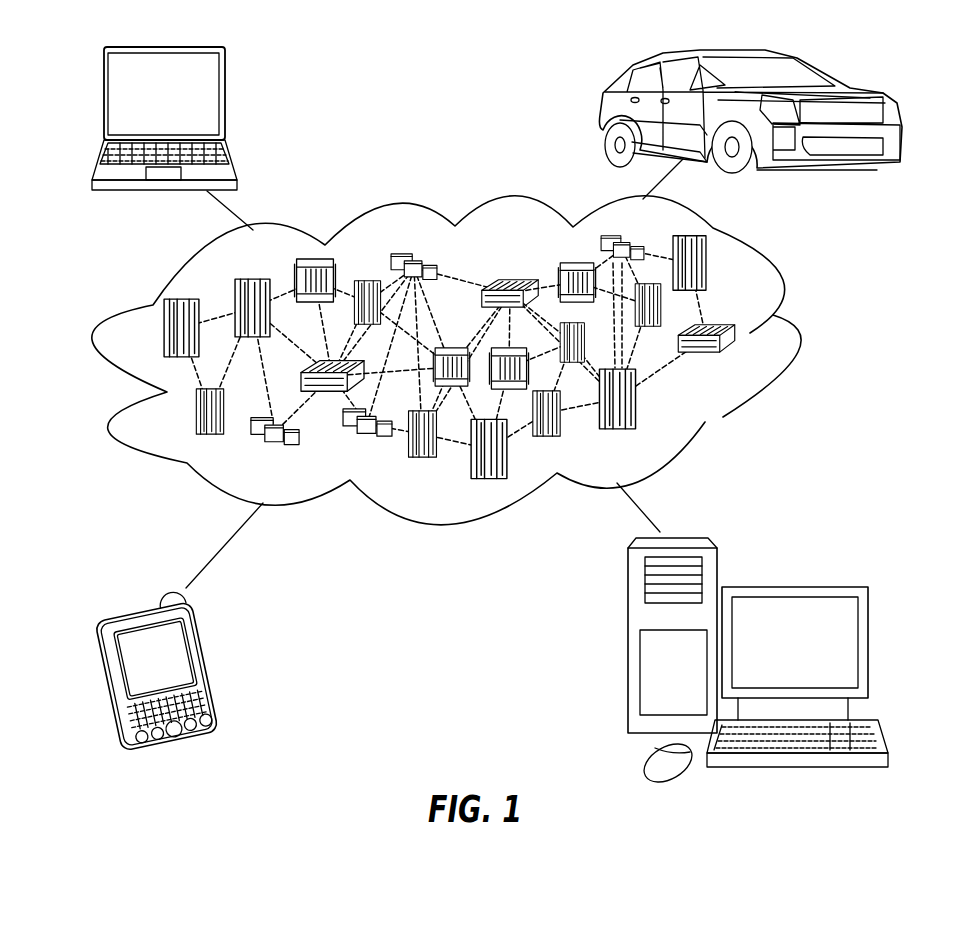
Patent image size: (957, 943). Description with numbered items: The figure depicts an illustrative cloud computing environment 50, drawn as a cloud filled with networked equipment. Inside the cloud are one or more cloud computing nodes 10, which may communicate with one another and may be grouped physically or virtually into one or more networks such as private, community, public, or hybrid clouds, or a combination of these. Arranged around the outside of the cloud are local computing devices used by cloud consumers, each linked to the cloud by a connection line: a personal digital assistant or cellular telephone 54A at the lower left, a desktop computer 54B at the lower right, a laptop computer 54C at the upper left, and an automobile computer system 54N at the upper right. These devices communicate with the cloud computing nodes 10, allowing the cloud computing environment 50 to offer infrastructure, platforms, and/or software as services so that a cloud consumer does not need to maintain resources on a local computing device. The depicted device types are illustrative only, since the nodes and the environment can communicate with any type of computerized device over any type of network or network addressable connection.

The cloud computing nodes 10 is at (760, 367).
The cloud computing environment 50 is at (791, 337).
The personal digital assistant (PDA) or cellular telephone 54A is at (213, 667).
The desktop computer 54B is at (793, 586).
The laptop computer 54C is at (225, 101).
The automobile computer system 54N is at (604, 112).